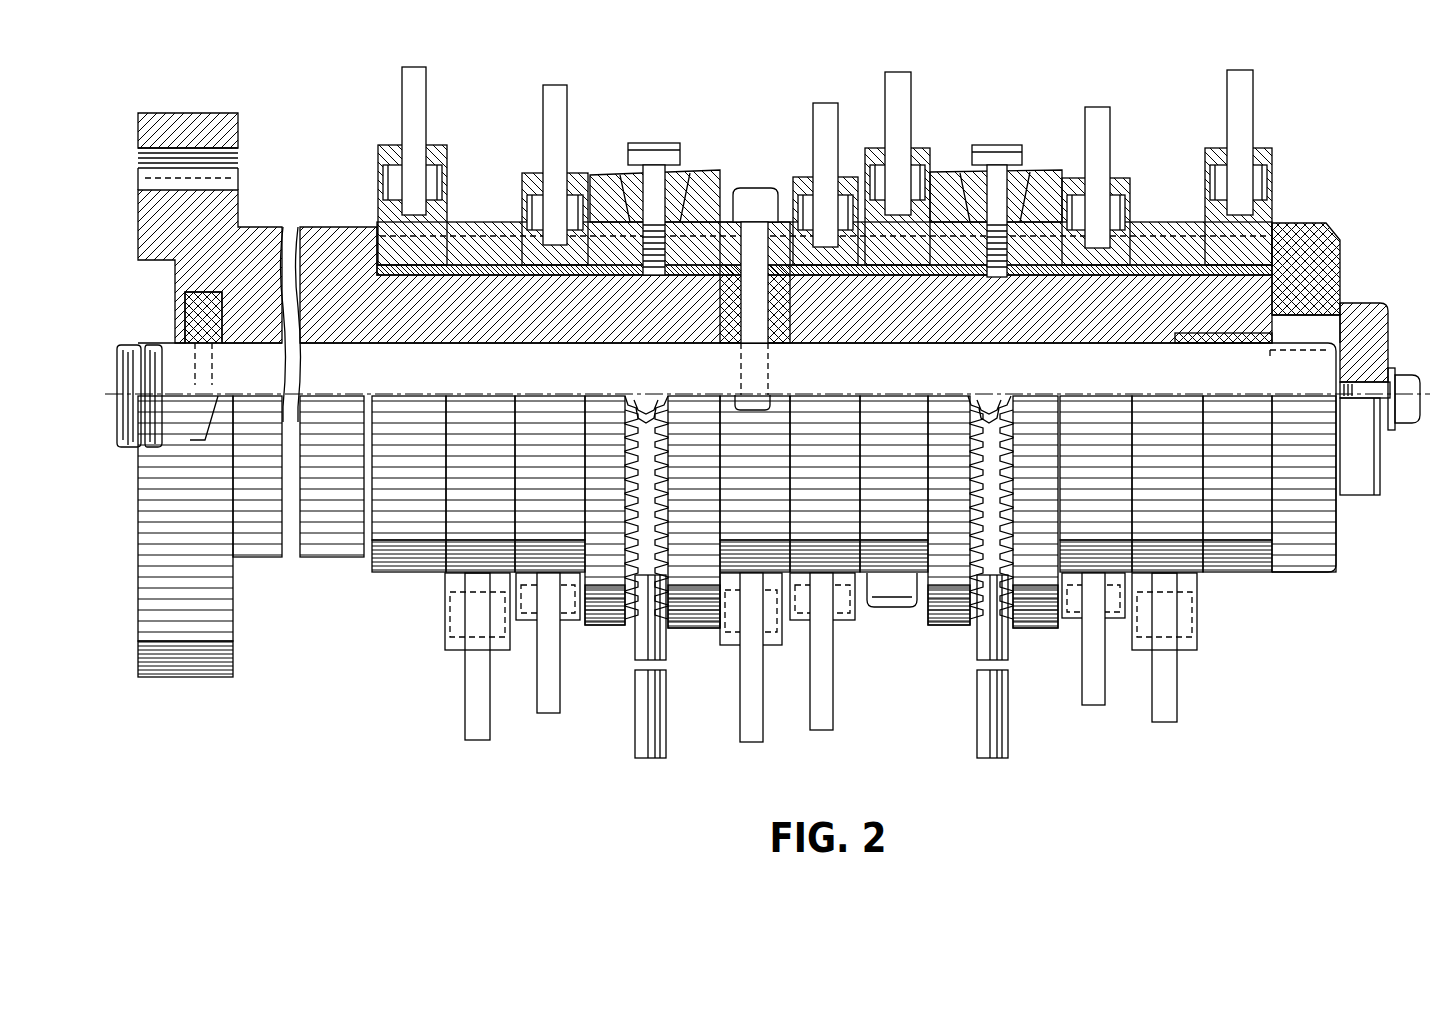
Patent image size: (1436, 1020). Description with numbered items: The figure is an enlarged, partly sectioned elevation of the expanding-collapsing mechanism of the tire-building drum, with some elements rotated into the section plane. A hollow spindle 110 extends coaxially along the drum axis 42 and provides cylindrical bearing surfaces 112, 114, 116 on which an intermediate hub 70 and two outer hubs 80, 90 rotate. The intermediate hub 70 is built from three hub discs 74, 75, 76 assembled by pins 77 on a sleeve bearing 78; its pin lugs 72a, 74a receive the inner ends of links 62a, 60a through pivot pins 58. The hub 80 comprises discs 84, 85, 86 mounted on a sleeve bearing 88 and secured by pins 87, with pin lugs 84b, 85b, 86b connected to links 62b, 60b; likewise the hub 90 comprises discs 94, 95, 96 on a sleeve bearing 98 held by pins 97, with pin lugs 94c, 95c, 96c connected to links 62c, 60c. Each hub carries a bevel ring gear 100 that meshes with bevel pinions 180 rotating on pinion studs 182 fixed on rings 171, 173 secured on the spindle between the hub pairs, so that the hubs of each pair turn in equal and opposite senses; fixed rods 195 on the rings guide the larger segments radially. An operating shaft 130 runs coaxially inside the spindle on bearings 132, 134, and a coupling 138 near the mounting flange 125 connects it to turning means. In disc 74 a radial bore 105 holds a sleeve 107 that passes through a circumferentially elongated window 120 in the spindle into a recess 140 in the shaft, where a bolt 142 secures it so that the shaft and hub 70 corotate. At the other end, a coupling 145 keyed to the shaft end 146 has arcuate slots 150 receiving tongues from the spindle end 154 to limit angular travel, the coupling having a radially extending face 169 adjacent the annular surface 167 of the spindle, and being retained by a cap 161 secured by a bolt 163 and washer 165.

The mounting flange 125 is at (218, 113).
The bearing 132 is at (205, 345).
The coupling 138 is at (200, 485).
The operating shaft 130 is at (386, 380).
The hollow spindle 110 is at (300, 230).
The cylindrical bearing surface 112 is at (445, 300).
The sleeve bearing 88 is at (455, 265).
The axially extending pin 87 is at (488, 245).
The annular surface 167 is at (372, 245).
The pin lug 86b is at (385, 150).
The link 60b is at (412, 70).
The pin lug 84b is at (575, 180).
The link 62b is at (555, 90).
The pin lug 85b is at (455, 635).
The pin lug 72a is at (845, 185).
The link 62a is at (818, 105).
The pin lug 74a is at (880, 150).
The link 60a is at (900, 85).
The pin lug 94c is at (1120, 185).
The link 62c is at (1098, 115).
The pin lug 96c is at (1262, 160).
The pin lug 95c is at (1190, 635).
The link 60c is at (1245, 90).
The bevel pinion 180 is at (700, 175).
The pinion stud 182 is at (650, 143).
The bevel ring gear 100 is at (605, 178).
The fixed rod 195 is at (650, 750).
The radial bore 105 is at (720, 303).
The bolt 142 is at (758, 192).
The recess 140 is at (775, 396).
The sleeve 107 is at (735, 325).
The ring 171 is at (625, 300).
The window 120 is at (790, 310).
The pin 77 is at (850, 290).
The cylindrical bearing surface 114 is at (880, 290).
The sleeve bearing 78 is at (950, 300).
The ring 173 is at (992, 290).
The cylindrical bearing surface 116 is at (1150, 290).
The bearing 134 is at (1240, 340).
The shaft end 146 is at (1333, 355).
The drum axis 42 is at (488, 394).
The third hub disc 86 is at (392, 446).
The second hub disc 85 is at (465, 446).
The hub disc 84 is at (535, 446).
The hub disc 74 is at (739, 446).
The hub disc 75 is at (809, 446).
The hub disc 76 is at (880, 446).
The hub disc 94 is at (1080, 452).
The second hub disc 95 is at (1152, 452).
The third hub disc 96 is at (1222, 452).
The cap 161 is at (1360, 495).
The coupling 145 is at (1322, 235).
The spindle end 154 is at (1342, 255).
The radially extending face 169 is at (1275, 248).
The arcuate slot 150 is at (1345, 308).
The washer 165 is at (1393, 418).
The bolt 163 is at (1410, 440).
The hub 80 is at (512, 160).
The intermediate hub 70 is at (800, 148).
The hub 90 is at (1118, 158).
The pivot pin 58 is at (1078, 186).
The sleeve bearing 98 is at (1150, 235).
The axially extending pin 97 is at (1165, 240).